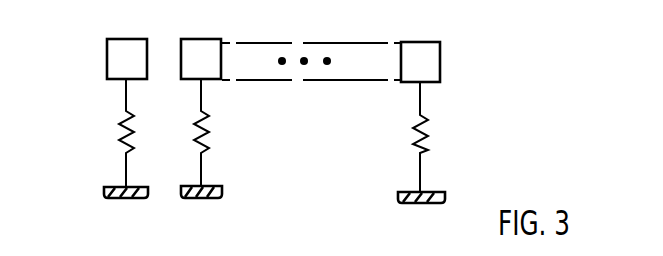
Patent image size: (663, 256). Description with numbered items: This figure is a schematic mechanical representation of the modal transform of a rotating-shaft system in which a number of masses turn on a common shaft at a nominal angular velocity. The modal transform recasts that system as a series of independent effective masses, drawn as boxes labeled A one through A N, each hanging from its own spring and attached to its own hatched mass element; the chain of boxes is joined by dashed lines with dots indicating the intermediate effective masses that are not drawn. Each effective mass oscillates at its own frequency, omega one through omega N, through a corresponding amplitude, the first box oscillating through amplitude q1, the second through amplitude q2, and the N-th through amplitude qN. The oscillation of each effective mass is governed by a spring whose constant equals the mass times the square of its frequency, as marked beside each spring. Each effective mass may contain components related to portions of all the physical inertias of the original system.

The amplitude of first effective mass q1 is at (134, 39).
The amplitude of second effective mass q2 is at (209, 39).
The amplitude of N-th effective mass qN is at (425, 42).